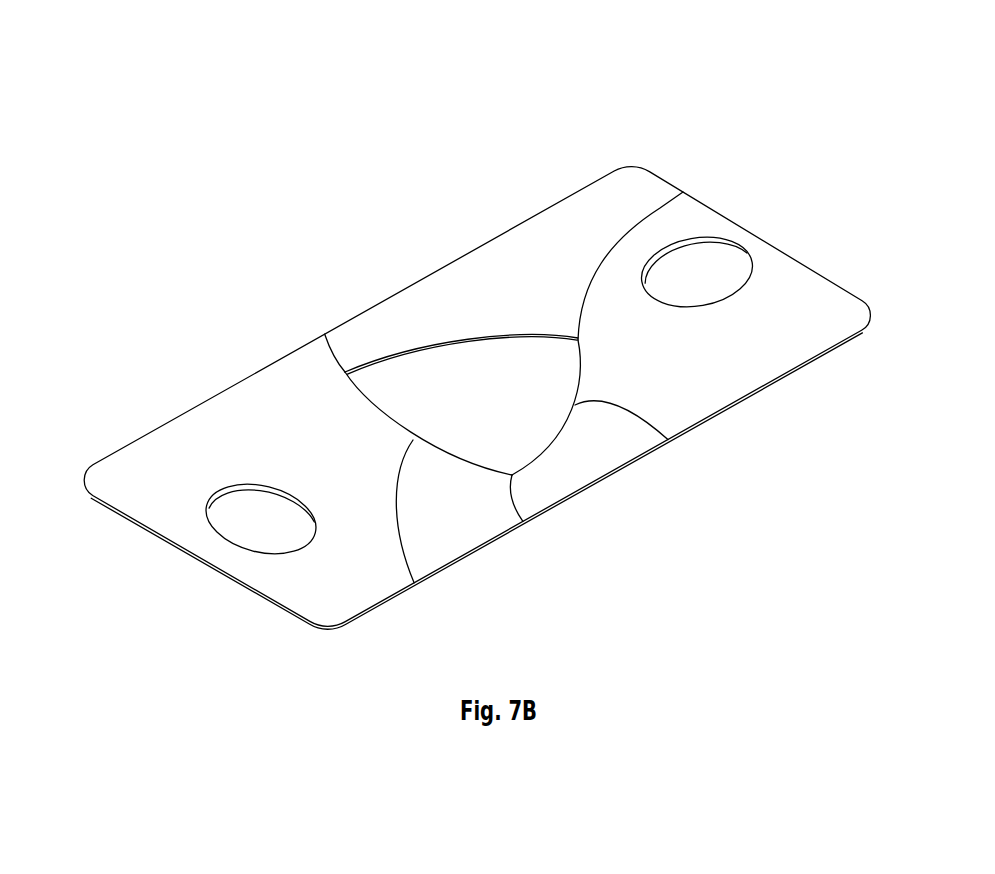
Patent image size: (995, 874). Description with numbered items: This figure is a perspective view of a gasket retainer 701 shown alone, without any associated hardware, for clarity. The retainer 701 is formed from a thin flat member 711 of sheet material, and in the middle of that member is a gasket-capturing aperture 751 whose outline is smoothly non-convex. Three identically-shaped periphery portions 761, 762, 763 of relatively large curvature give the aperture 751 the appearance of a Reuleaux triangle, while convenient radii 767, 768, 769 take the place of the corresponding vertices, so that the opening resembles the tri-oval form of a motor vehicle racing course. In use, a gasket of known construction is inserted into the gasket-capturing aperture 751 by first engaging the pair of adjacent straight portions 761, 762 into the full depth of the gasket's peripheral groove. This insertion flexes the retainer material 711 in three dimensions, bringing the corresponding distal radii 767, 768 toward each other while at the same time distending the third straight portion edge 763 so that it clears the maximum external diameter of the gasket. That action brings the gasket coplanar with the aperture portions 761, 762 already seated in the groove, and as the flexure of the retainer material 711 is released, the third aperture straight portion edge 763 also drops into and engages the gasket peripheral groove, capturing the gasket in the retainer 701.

The retainer 701 is at (555, 193).
The thin flat member 711 is at (127, 485).
The gasket-capturing aperture 751 is at (492, 409).
The periphery portion 761 is at (414, 583).
The periphery portion 762 is at (668, 440).
The periphery portion 763 is at (465, 340).
The radius 767 is at (325, 334).
The radius 768 is at (683, 192).
The radius 769 is at (523, 521).